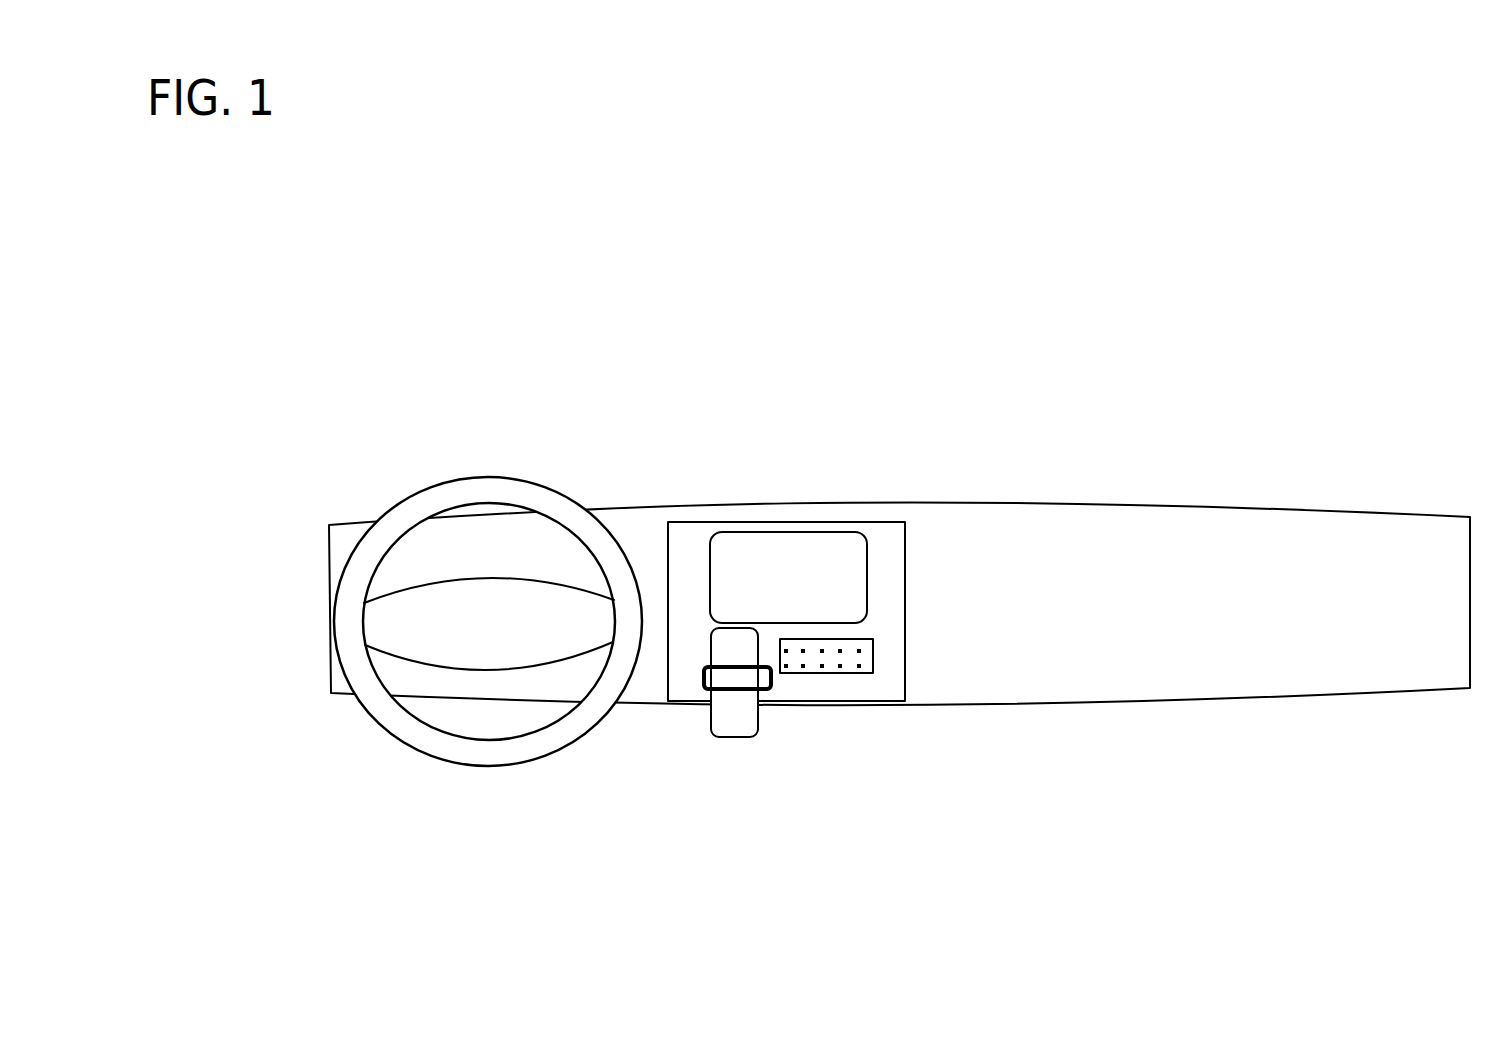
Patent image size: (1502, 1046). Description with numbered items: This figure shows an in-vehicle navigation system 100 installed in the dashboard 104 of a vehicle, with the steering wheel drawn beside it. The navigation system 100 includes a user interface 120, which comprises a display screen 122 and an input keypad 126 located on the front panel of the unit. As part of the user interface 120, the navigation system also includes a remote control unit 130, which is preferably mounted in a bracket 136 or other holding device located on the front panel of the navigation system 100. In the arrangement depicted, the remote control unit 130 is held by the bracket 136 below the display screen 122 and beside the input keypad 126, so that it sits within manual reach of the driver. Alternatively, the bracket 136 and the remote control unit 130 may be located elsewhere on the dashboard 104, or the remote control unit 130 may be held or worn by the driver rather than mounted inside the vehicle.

The navigation system 100 is at (915, 547).
The dashboard 104 is at (1329, 505).
The user interface 120 is at (1015, 595).
The display screen 122 is at (817, 558).
The input keypad 126 is at (893, 628).
The remote control unit 130 is at (723, 763).
The bracket 136 is at (697, 675).